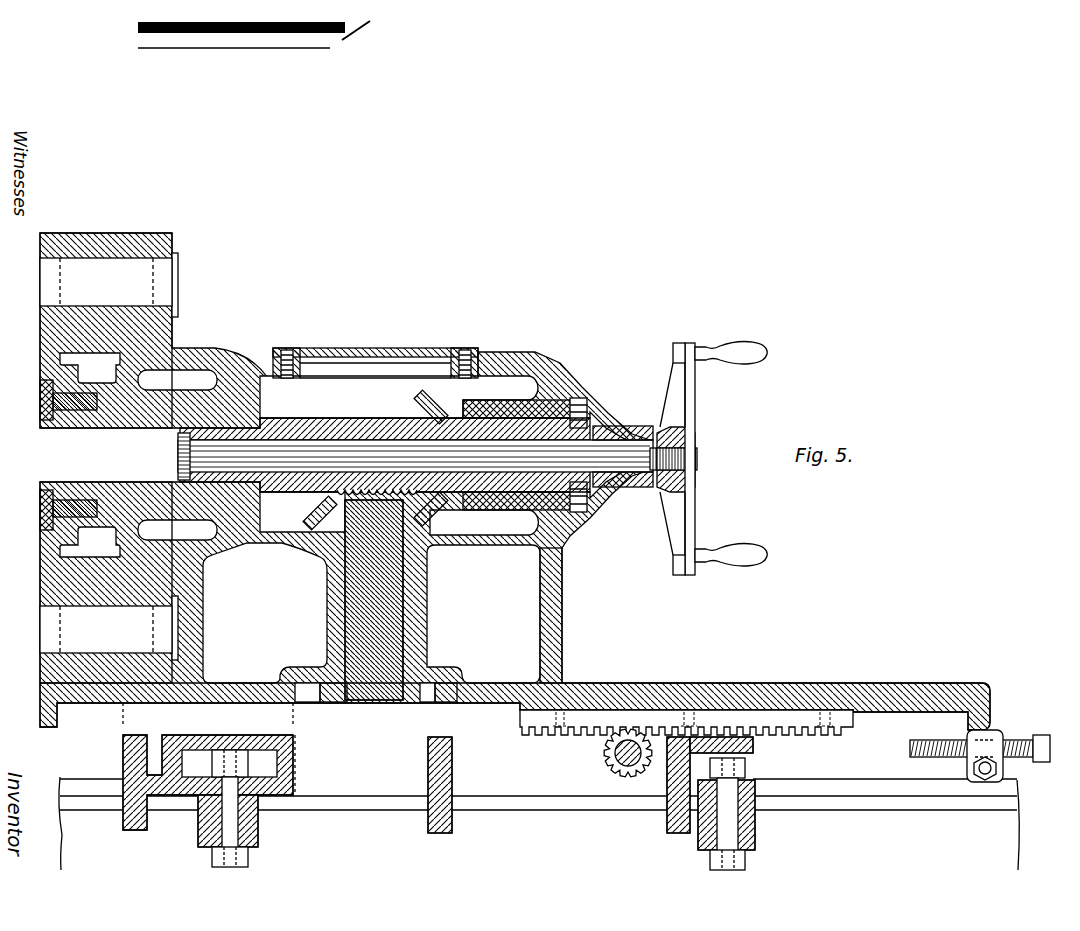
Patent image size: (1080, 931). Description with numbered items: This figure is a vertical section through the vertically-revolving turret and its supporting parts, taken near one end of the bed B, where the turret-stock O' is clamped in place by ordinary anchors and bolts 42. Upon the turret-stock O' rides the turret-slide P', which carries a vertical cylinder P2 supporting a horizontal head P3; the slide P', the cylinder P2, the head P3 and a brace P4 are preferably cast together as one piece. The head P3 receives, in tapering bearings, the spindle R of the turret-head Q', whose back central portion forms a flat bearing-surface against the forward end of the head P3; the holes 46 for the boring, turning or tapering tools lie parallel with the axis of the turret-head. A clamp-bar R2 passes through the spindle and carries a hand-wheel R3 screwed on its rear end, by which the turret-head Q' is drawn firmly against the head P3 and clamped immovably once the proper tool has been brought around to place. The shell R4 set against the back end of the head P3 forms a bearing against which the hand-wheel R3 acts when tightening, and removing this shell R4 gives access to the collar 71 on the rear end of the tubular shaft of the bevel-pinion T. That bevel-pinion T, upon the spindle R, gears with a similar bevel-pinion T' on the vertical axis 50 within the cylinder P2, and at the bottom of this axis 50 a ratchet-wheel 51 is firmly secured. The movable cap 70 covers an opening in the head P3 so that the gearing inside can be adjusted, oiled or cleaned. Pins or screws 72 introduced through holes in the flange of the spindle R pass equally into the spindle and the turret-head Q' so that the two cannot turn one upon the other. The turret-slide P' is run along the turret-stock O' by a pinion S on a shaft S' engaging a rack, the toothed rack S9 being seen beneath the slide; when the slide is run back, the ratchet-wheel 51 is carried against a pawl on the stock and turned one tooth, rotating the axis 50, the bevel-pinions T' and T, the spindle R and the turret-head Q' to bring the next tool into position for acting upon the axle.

The holes 46 is at (106, 455).
The turret-head Q' is at (93, 458).
The horizontal head P3 is at (484, 562).
The movable cap 70 is at (398, 348).
The bevel-pinion T is at (425, 457).
The shell R4 is at (588, 411).
The collar 71 is at (588, 414).
The hand-wheel R3 is at (680, 458).
The spindle R is at (40, 384).
The pins or screws 72 is at (40, 408).
The clamp-bar R2 is at (177, 450).
The bevel-pinion T' is at (352, 510).
The vertical axis 50 is at (374, 600).
The vertical cylinder P2 is at (427, 603).
The brace P4 is at (562, 601).
The turret-slide P' is at (515, 697).
The ratchet-wheel 51 is at (328, 703).
The turret-stock O' is at (309, 734).
The rack S9 is at (558, 734).
The pinion S is at (616, 753).
The shaft S' is at (608, 766).
The bed B is at (532, 839).
The anchors and bolts 42 is at (489, 811).